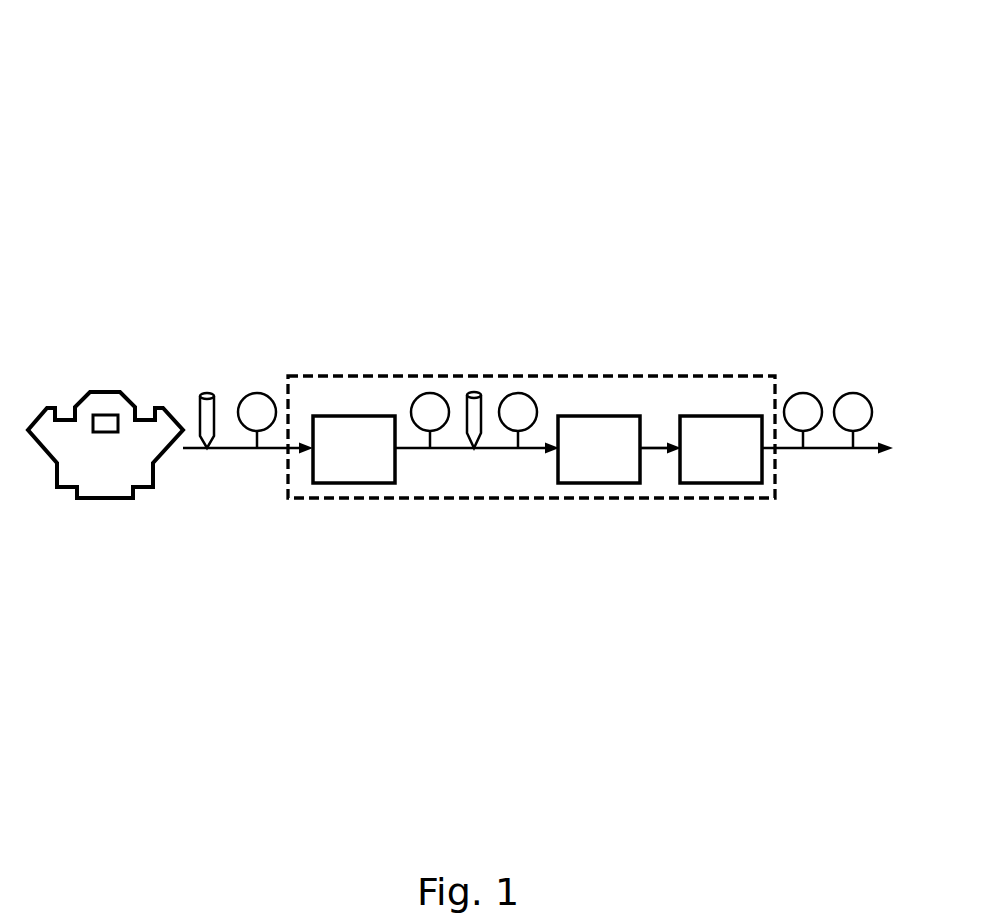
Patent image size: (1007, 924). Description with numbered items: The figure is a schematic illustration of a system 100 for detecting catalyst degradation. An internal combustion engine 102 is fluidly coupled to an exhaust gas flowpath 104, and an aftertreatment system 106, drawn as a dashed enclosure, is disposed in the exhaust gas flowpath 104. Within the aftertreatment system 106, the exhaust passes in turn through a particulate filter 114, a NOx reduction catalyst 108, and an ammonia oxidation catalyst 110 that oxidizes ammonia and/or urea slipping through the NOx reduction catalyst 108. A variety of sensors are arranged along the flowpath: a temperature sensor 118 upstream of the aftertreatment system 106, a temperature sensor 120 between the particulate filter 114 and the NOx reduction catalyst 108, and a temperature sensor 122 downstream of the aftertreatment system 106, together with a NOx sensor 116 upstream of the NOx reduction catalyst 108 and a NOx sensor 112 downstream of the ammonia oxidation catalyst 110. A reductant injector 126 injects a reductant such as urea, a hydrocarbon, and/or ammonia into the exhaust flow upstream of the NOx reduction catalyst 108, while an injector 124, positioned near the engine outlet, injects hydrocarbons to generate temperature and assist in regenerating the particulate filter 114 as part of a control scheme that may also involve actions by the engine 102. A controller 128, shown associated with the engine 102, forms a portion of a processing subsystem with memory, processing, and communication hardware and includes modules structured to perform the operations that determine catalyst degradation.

The system 100 is at (173, 75).
The internal combustion engine 102 is at (127, 500).
The exhaust gas flowpath 104 is at (233, 450).
The aftertreatment system 106 is at (503, 500).
The NOx reduction catalyst 108 is at (580, 461).
The ammonia oxidation catalyst 110 is at (702, 461).
The NOx sensor 112 is at (802, 392).
The particulate filter 114 is at (335, 461).
The NOx sensor 116 is at (427, 392).
The temperature sensor 118 is at (255, 391).
The temperature sensor 120 is at (522, 392).
The temperature sensor 122 is at (852, 392).
The injector 124 is at (205, 391).
The reductant injector 126 is at (475, 390).
The controller 128 is at (102, 413).